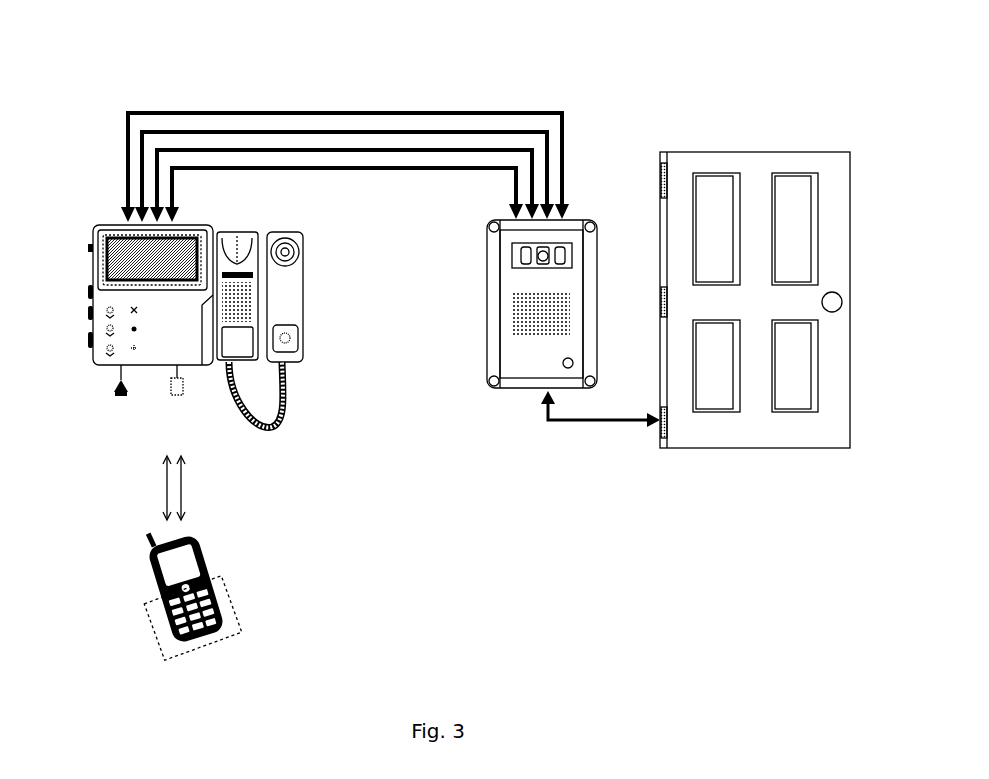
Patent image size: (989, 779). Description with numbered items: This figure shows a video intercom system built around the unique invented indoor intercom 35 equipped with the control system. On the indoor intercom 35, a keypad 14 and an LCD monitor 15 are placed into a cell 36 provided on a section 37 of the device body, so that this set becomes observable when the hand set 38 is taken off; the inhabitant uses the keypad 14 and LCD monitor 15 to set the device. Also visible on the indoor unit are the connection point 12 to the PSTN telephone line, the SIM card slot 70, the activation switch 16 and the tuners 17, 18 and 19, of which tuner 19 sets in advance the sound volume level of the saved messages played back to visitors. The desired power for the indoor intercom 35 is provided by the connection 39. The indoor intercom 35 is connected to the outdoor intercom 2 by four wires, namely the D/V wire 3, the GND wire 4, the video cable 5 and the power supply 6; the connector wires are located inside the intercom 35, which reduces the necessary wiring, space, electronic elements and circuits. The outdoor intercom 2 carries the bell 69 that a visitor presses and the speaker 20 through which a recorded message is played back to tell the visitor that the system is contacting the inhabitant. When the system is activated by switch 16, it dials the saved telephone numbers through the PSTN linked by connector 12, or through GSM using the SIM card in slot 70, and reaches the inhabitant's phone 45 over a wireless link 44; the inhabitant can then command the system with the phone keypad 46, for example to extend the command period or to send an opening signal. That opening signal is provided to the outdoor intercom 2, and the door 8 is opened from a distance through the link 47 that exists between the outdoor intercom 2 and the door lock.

The outdoor intercom 2 is at (555, 334).
The D/V wire 3 is at (517, 188).
The GND wire 4 is at (316, 148).
The video cable 5 is at (392, 130).
The power supply wire 6 is at (122, 182).
The door 8 is at (703, 152).
The connection point to telephone line (PSTN) 12 is at (177, 385).
The keypad 14 is at (232, 305).
The LCD monitor 15 is at (232, 266).
The activation switch 16 is at (90, 250).
The tuner 17 is at (89, 341).
The tuner 18 is at (89, 313).
The tuner 19 is at (89, 292).
The speaker 20 is at (572, 312).
The indoor intercom 35 is at (96, 232).
The cell 36 is at (283, 308).
The section of the device body 37 is at (240, 347).
The hand set 38 is at (303, 312).
The power connection 39 is at (120, 387).
The wireless link 44 is at (195, 503).
The inhabitant's phone 45 is at (205, 560).
The phone keypad 46 is at (146, 614).
The link 47 is at (565, 422).
The bell 69 is at (574, 362).
The SIM card slot 70 is at (93, 276).